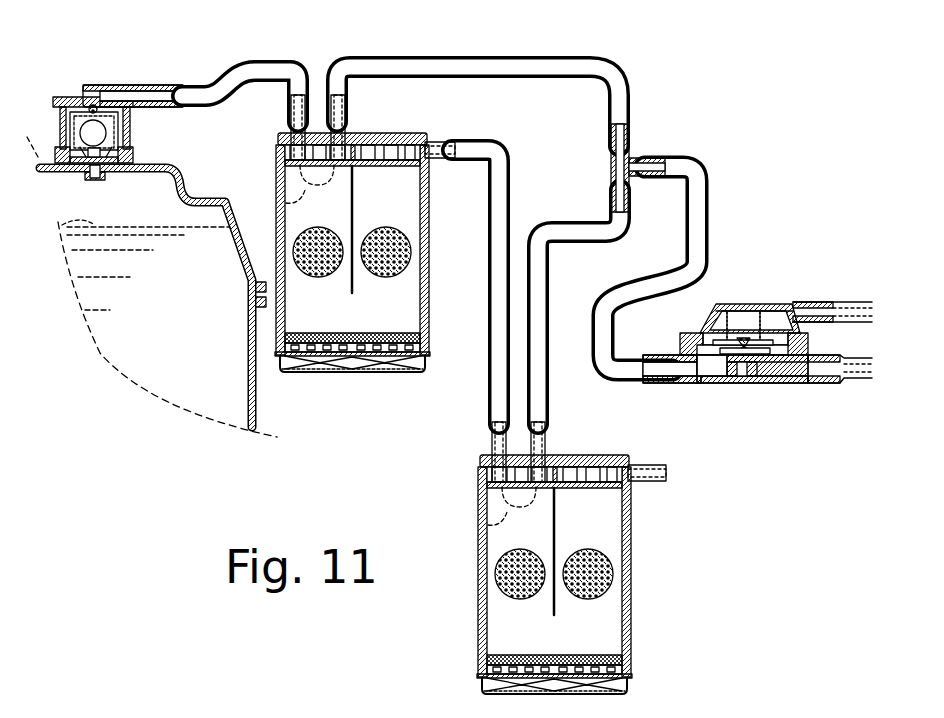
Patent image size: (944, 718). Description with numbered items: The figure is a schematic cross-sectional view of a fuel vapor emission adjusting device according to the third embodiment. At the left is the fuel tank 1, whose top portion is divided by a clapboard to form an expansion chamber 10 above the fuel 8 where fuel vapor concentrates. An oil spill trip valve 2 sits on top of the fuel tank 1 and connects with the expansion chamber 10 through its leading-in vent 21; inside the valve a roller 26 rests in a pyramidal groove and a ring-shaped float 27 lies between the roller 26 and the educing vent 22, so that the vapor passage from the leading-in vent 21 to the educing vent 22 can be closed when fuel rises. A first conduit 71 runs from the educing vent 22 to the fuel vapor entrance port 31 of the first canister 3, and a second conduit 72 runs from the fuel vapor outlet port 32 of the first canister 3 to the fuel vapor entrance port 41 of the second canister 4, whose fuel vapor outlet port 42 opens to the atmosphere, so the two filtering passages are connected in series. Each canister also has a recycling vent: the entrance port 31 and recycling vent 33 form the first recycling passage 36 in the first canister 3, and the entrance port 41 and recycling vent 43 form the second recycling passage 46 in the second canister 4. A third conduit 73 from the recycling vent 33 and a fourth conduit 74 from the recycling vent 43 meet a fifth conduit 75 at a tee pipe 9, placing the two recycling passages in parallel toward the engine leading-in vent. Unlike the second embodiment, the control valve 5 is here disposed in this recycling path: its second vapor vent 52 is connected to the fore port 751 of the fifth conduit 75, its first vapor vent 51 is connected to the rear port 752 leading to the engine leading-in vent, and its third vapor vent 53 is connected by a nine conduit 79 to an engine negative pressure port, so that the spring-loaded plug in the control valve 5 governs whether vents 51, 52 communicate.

The fuel tank 1 is at (254, 400).
The oil spill trip valve 2 is at (96, 72).
The first canister 3 is at (347, 378).
The second canister 4 is at (636, 577).
The control valve 5 is at (743, 292).
The fuel 8 is at (70, 227).
The tee pipe 9 is at (612, 175).
The expansion chamber 10 is at (157, 206).
The leading-in vent 21 is at (135, 157).
The educing vent 22 is at (98, 97).
The roller 26 is at (101, 133).
The ring-shaped float 27 is at (78, 112).
The fuel vapor entrance port 31 is at (292, 124).
The fuel vapor outlet port 32 is at (441, 152).
The fuel vapor recycling vent 33 is at (342, 128).
The first recycling passage 36 is at (288, 205).
The fuel vapor entrance port 41 is at (492, 447).
The fuel vapor outlet port 42 is at (645, 482).
The fuel vapor recycling vent 43 is at (542, 452).
The second recycling passage 46 is at (486, 515).
The first vapor vent 51 is at (758, 367).
The second vapor vent 52 is at (692, 367).
The third vapor vent 53 is at (792, 305).
The first conduit 71 is at (240, 66).
The second conduit 72 is at (512, 215).
The third conduit 73 is at (508, 58).
The fourth conduit 74 is at (557, 367).
The fifth conduit 75 is at (716, 196).
The nine conduit 79 is at (848, 300).
The fore port 751 is at (702, 176).
The rear port 752 is at (848, 380).